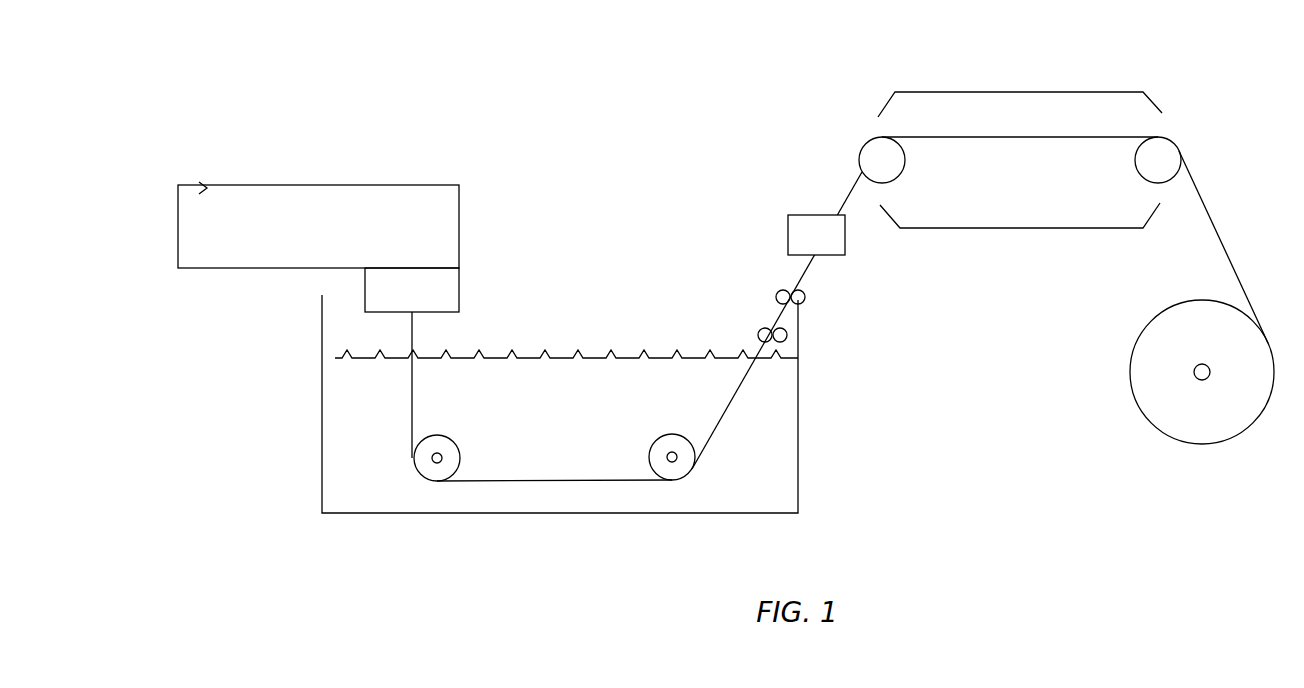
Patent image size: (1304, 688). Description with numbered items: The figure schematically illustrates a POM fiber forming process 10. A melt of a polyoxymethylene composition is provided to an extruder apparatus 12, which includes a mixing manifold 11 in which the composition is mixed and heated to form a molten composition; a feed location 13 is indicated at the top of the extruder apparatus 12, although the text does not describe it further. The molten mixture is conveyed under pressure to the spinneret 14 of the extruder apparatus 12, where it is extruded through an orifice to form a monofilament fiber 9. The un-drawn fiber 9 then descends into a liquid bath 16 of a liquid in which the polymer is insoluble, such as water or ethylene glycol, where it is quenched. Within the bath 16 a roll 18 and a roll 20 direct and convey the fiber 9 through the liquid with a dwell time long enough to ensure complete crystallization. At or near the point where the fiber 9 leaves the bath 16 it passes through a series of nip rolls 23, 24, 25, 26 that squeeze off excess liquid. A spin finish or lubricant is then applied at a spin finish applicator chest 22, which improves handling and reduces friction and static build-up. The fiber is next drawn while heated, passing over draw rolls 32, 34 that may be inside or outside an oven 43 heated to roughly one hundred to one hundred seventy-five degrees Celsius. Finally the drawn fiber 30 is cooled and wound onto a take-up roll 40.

The fiber 9 is at (412, 383).
The POM fiber forming process 10 is at (257, 82).
The mixing manifold 11 is at (318, 225).
The extruder apparatus 12 is at (464, 230).
The inlet 13 is at (203, 186).
The spinneret 14 is at (447, 285).
The liquid bath 16 is at (335, 384).
The roll 18 is at (438, 477).
The roll 20 is at (688, 467).
The spin finish applicator chest 22 is at (816, 235).
The nip roll 23 is at (759, 332).
The nip roll 24 is at (788, 335).
The nip roll 25 is at (777, 293).
The nip roll 26 is at (805, 294).
The drawn fiber 30 is at (1207, 200).
The draw roll 32 is at (889, 163).
The draw roll 34 is at (1143, 172).
The take-up roll 40 is at (1156, 395).
The oven 43 is at (1005, 103).